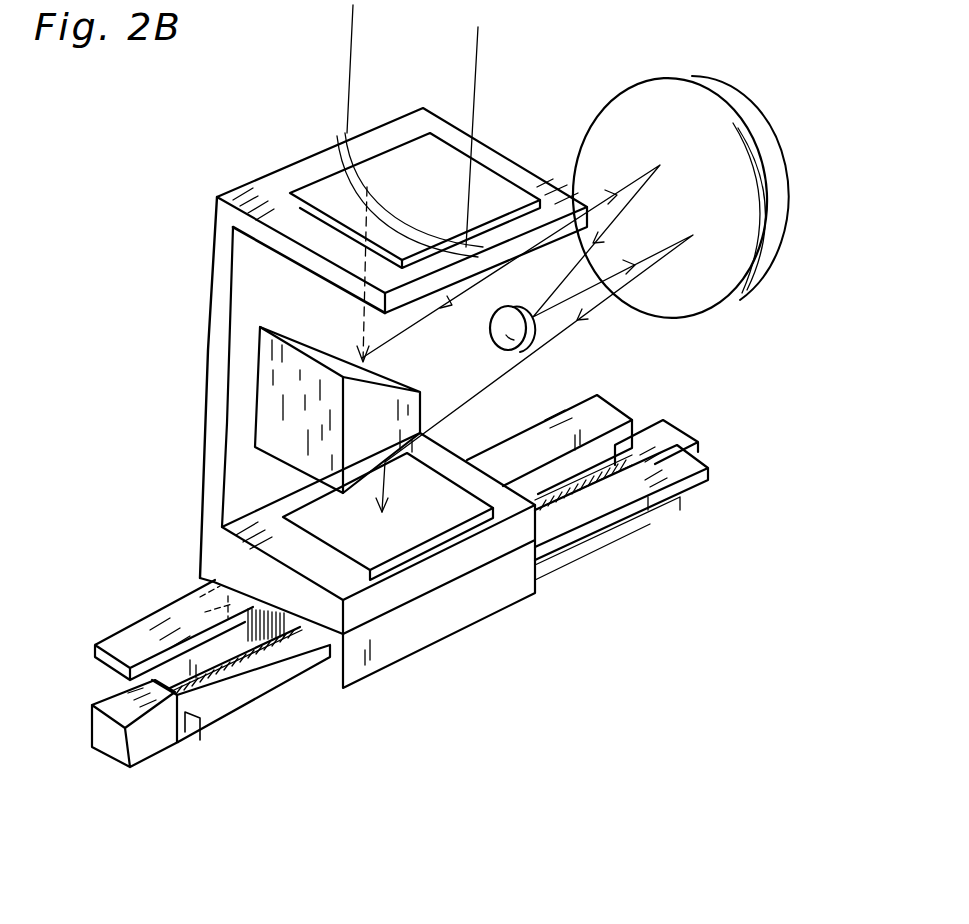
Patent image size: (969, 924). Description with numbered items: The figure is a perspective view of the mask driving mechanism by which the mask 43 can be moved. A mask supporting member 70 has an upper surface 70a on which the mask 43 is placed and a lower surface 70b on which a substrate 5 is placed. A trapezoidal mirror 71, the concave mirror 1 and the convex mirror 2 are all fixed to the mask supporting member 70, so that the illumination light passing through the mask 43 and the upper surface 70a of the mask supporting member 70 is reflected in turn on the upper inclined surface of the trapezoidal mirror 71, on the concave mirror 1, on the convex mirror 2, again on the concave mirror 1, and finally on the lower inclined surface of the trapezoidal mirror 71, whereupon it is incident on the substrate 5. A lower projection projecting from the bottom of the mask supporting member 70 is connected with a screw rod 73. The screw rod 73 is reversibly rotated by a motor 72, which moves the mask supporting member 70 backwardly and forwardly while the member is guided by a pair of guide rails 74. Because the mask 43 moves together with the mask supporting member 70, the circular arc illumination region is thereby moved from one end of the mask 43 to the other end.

The concave mirror 1 is at (737, 196).
The convex mirror 2 is at (530, 353).
The substrate 5 is at (400, 530).
The mask 43 is at (312, 193).
The mask supporting member 70 is at (336, 371).
The upper surface 70a is at (317, 232).
The lower surface 70b is at (272, 543).
The trapezoidal mirror 71 is at (263, 420).
The motor 72 is at (150, 745).
The screw rod 73 is at (228, 672).
The guide rails 74 is at (97, 662).